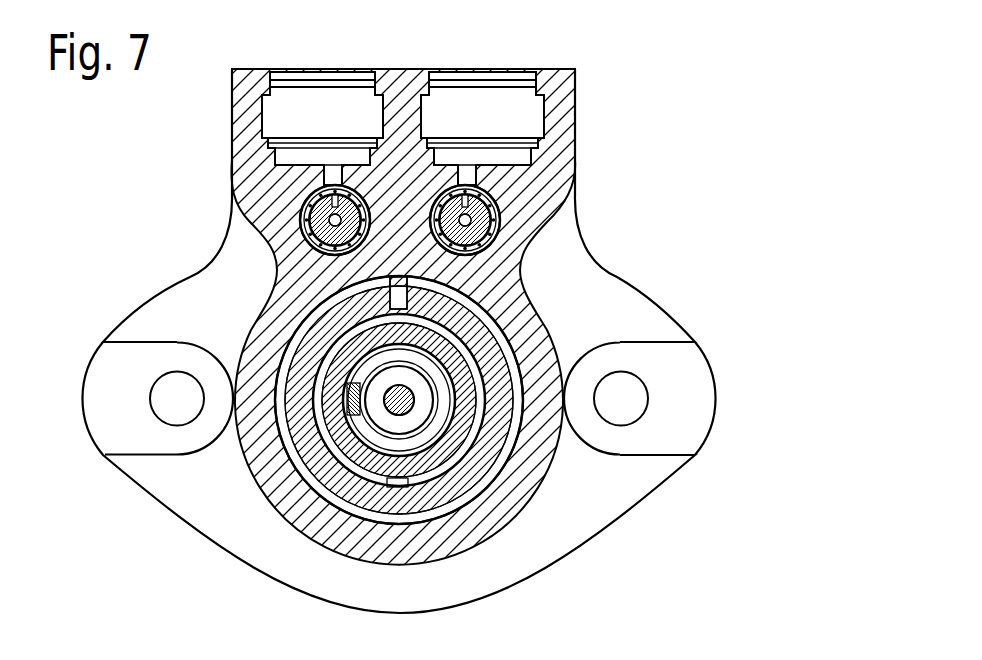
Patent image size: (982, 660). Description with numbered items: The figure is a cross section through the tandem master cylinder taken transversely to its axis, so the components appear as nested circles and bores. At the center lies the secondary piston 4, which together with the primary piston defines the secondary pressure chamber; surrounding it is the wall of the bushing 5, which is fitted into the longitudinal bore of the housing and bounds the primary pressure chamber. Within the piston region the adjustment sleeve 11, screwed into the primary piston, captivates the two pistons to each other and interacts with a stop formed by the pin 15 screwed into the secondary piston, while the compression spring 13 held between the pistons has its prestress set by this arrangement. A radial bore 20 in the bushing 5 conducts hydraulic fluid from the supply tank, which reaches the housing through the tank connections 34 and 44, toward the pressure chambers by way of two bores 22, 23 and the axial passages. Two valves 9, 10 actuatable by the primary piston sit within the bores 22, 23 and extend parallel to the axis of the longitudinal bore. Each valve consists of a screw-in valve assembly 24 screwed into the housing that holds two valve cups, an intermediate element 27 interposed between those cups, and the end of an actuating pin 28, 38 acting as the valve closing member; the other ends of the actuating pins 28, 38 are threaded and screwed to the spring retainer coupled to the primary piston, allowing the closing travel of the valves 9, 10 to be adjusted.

The secondary piston 4 is at (419, 491).
The bushing 5 is at (396, 468).
The valve 9 is at (271, 187).
The valve 10 is at (537, 187).
The adjustment sleeve 11 is at (413, 513).
The compression spring 13 is at (241, 329).
The pin 15 is at (384, 510).
The radial bore 20 is at (535, 276).
The bore 22 is at (545, 205).
The bore 23 is at (260, 220).
The screw-in valve assembly 24 is at (409, 207).
The intermediate element 27 is at (404, 98).
The actuating pin 28 is at (482, 87).
The tank connection 34 is at (490, 73).
The actuating pin 38 is at (322, 87).
The tank connection 44 is at (314, 73).